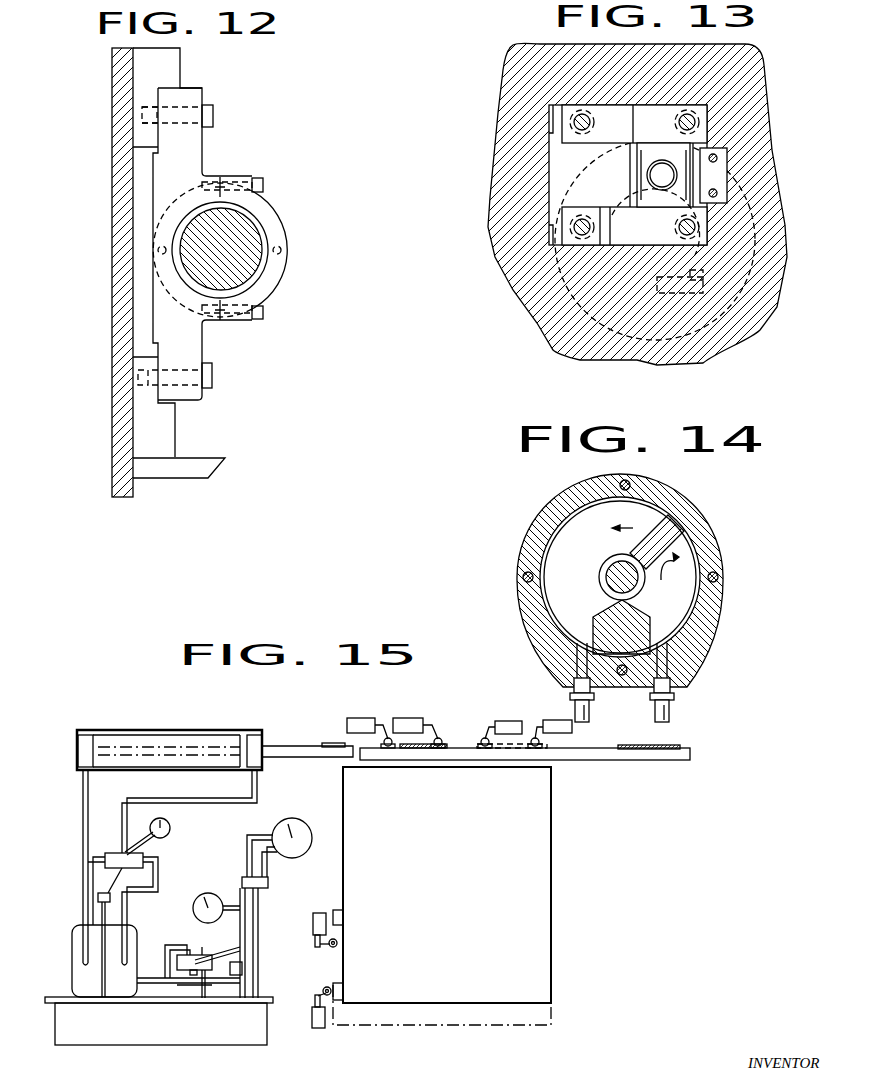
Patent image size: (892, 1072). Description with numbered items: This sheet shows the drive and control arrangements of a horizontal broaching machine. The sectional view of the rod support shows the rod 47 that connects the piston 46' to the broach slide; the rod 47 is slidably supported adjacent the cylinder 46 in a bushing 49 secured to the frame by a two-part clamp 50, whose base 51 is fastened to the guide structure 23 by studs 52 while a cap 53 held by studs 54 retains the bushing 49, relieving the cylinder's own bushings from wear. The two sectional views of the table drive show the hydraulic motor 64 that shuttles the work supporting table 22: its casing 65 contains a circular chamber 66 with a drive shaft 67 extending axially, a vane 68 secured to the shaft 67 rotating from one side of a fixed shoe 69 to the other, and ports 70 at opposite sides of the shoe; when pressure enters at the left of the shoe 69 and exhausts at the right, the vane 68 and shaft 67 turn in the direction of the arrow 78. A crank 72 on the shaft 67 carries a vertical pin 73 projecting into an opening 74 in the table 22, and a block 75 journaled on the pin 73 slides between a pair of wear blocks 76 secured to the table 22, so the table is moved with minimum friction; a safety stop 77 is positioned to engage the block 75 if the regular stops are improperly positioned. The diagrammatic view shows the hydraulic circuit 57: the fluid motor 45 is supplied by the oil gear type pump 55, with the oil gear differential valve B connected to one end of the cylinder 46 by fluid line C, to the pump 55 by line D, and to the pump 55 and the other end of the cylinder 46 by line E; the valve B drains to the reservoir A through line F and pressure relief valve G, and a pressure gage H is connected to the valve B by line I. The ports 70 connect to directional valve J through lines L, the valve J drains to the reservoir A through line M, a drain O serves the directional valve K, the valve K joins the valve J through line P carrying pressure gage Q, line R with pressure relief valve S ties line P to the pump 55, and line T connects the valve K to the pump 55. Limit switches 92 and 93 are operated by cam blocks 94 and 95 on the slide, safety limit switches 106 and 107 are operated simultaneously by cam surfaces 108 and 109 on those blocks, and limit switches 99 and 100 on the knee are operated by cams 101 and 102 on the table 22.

In FIG. 13, the work supporting table 22 is at (768, 122).
In FIG. 15, the work supporting table 22 is at (540, 918).
In FIG. 12, the guide structure 23 is at (126, 236).
In FIG. 15, the fluid motor 45 is at (190, 731).
In FIG. 15, the cylinder 46 is at (159, 735).
In FIG. 15, the piston 46' is at (265, 733).
In FIG. 12, the rod 47 is at (250, 238).
In FIG. 15, the rod 47 is at (278, 752).
In FIG. 12, the bushing 49 is at (268, 240).
In FIG. 12, the two-part clamp 50 is at (206, 163).
In FIG. 12, the base of clamp 51 is at (192, 100).
In FIG. 12, the studs 52 is at (213, 118).
In FIG. 12, the cap 53 is at (276, 283).
In FIG. 12, the studs 54 is at (261, 180).
In FIG. 15, the oil gear type pump 55 is at (88, 975).
In FIG. 15, the hydraulic circuit 57 is at (238, 884).
In FIG. 13, the hydraulic motor 64 is at (762, 290).
In FIG. 14, the hydraulic motor 64 is at (718, 537).
In FIG. 14, the casing 65 is at (720, 566).
In FIG. 14, the circular chamber 66 is at (680, 610).
In FIG. 13, the drive shaft 67 is at (656, 236).
In FIG. 14, the drive shaft 67 is at (606, 572).
In FIG. 14, the vane 68 is at (651, 546).
In FIG. 14, the fixed shoe 69 is at (617, 612).
In FIG. 14, the ports 70 is at (578, 664).
In FIG. 13, the crank 72 is at (626, 160).
In FIG. 13, the crank pin 73 is at (656, 180).
In FIG. 13, the opening 74 is at (548, 172).
In FIG. 13, the block 75 is at (636, 177).
In FIG. 13, the wear blocks 76 is at (503, 286).
In FIG. 13, the safety stop 77 is at (728, 195).
In FIG. 14, the arrow 78 is at (667, 579).
In FIG. 15, the limit switch 92 is at (408, 725).
In FIG. 15, the limit switch 93 is at (512, 722).
In FIG. 15, the cam block 94 is at (330, 742).
In FIG. 15, the cam block 95 is at (650, 745).
In FIG. 15, the limit switch 99 is at (320, 918).
In FIG. 15, the limit switch 100 is at (313, 1010).
In FIG. 15, the cam 101 is at (338, 910).
In FIG. 15, the cam 102 is at (345, 1000).
In FIG. 15, the safety limit switch 106 is at (365, 722).
In FIG. 15, the safety limit switch 107 is at (560, 728).
In FIG. 15, the cam surface 108 is at (400, 750).
In FIG. 15, the cam surface 109 is at (680, 750).
In FIG. 15, the reservoir A is at (218, 1035).
In FIG. 15, the oil gear differential valve B is at (120, 855).
In FIG. 15, the fluid line C is at (189, 811).
In FIG. 15, the fluid line D is at (134, 891).
In FIG. 15, the fluid line E is at (83, 812).
In FIG. 15, the fluid line F is at (100, 918).
In FIG. 15, the pressure relief valve G is at (98, 896).
In FIG. 15, the pressure gage H is at (171, 830).
In FIG. 15, the fluid line I is at (150, 846).
In FIG. 15, the directional valve J is at (245, 877).
In FIG. 15, the directional valve K is at (202, 950).
In FIG. 15, the fluid lines L is at (262, 857).
In FIG. 15, the fluid line M is at (258, 945).
In FIG. 15, the drain O is at (206, 985).
In FIG. 15, the fluid line P is at (236, 946).
In FIG. 15, the pressure gage Q is at (193, 908).
In FIG. 15, the line R is at (187, 986).
In FIG. 15, the pressure relief valve S is at (237, 978).
In FIG. 15, the fluid line T is at (172, 950).